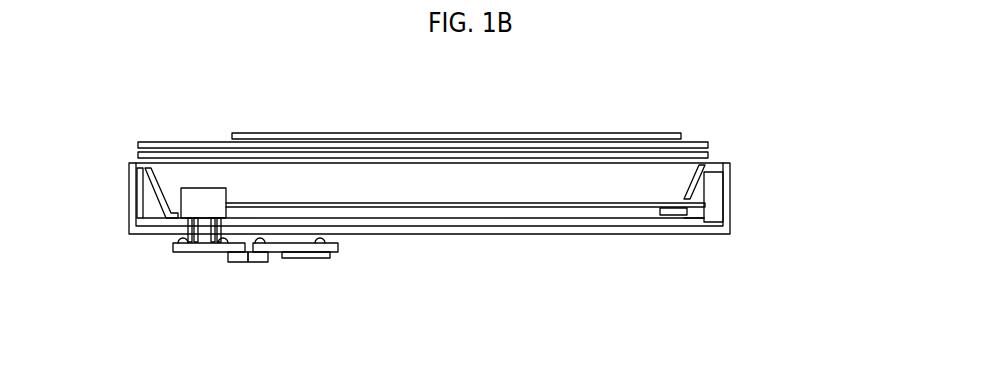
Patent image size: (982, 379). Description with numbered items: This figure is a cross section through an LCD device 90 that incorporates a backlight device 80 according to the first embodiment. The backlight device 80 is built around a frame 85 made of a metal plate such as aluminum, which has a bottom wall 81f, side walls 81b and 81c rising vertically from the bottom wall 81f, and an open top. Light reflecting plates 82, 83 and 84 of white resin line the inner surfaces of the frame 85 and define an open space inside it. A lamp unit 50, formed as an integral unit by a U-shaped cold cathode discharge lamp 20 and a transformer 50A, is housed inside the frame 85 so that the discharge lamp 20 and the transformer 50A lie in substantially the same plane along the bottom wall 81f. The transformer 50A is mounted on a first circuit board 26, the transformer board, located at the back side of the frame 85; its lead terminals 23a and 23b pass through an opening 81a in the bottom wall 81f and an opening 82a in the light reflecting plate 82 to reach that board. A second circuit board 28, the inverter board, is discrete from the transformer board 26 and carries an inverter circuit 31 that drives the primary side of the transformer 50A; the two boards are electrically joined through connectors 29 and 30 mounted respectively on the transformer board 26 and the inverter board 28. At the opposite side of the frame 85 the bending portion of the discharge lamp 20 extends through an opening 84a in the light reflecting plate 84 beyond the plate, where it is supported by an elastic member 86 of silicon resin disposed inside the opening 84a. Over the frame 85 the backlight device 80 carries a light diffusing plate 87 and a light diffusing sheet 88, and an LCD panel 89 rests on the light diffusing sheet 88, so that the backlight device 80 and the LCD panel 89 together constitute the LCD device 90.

The discharge lamp 20 is at (482, 208).
The lead terminal 23a is at (193, 255).
The lead terminal 23b is at (215, 255).
The first circuit board 26 is at (178, 253).
The second circuit board 28 is at (338, 253).
The connector 29 is at (237, 261).
The connector 30 is at (265, 261).
The inverter circuit 31 is at (313, 257).
The lamp unit 50 is at (207, 188).
The transformer 50A is at (195, 195).
The backlight device 80 is at (793, 122).
The opening 81a is at (205, 231).
The opening 82a is at (206, 231).
The side wall 81b is at (130, 212).
The side wall 81c is at (733, 226).
The bottom wall 81f is at (425, 236).
The light reflecting plate 82 is at (587, 220).
The light reflecting plate 83 is at (150, 185).
The light reflecting plate 84 is at (690, 196).
The opening 84a is at (674, 215).
The frame 85 is at (733, 210).
The elastic member 86 is at (690, 220).
The light diffusing plate 87 is at (708, 156).
The light diffusing sheet 88 is at (708, 146).
The LCD panel 89 is at (681, 136).
The LCD device 90 is at (833, 80).